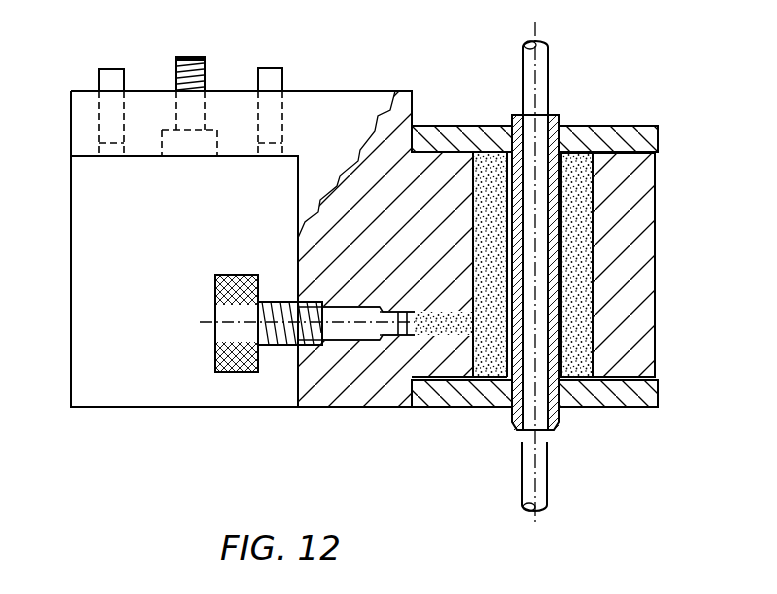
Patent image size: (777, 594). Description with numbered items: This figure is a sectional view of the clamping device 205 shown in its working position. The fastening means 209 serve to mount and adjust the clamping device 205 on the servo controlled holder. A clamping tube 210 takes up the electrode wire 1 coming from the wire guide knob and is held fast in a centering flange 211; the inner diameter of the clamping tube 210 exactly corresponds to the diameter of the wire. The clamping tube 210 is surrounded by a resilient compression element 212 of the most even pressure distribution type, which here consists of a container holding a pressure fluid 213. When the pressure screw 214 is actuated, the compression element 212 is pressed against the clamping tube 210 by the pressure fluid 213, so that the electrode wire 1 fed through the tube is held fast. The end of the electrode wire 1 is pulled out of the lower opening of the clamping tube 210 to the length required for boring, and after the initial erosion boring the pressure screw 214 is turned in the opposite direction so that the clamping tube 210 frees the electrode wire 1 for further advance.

The electrode wire 1 is at (538, 53).
The clamping device 205 is at (482, 72).
The fastening means 209 is at (103, 79).
The clamping tube 210 is at (557, 115).
The centering flange 211 is at (653, 127).
The resilient compression element 212 is at (657, 152).
The pressure fluid 213 is at (583, 280).
The pressure screw 214 is at (215, 285).